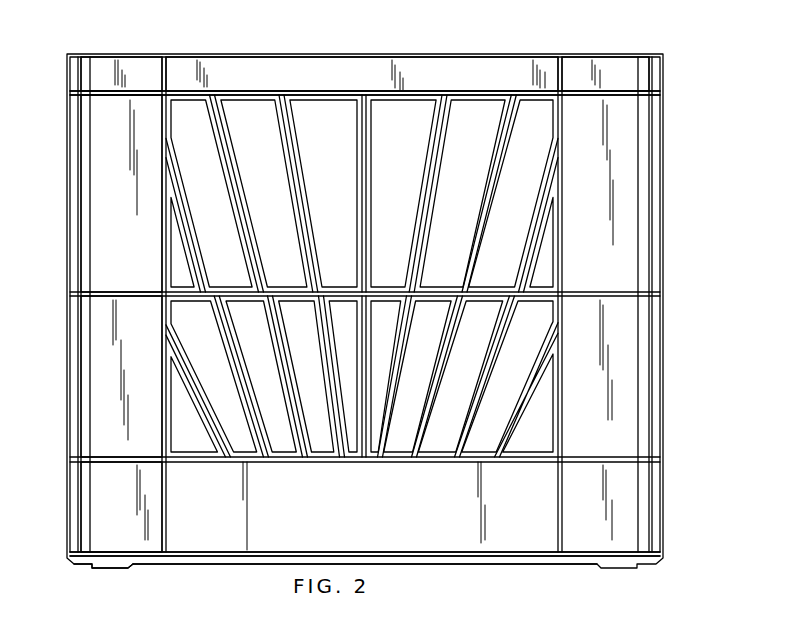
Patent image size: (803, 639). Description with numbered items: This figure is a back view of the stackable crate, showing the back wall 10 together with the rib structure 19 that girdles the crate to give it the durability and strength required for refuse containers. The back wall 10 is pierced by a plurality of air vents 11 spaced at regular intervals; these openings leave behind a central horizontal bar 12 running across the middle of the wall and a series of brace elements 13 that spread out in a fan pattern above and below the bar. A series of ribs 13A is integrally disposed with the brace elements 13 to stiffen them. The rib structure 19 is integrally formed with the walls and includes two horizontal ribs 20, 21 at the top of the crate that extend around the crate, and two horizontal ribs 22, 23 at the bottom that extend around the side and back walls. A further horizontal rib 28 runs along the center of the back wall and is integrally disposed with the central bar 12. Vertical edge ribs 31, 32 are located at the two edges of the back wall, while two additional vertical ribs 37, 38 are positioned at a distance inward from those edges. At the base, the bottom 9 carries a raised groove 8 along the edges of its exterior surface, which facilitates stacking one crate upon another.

The raised groove 8 is at (103, 563).
The bottom 9 is at (173, 560).
The back wall 10 is at (103, 193).
The air vents 11 is at (307, 110).
The central horizontal bar 12 is at (180, 298).
The brace elements 13 is at (435, 110).
The ribs 13A is at (513, 117).
The rib structure 19 is at (563, 187).
The horizontal rib 20 is at (110, 52).
The horizontal rib 21 is at (105, 97).
The horizontal rib 22 is at (100, 457).
The horizontal rib 23 is at (103, 550).
The horizontal rib 28 is at (103, 295).
The vertical edge rib 31 is at (78, 75).
The vertical edge rib 32 is at (652, 77).
The vertical rib 37 is at (172, 52).
The vertical rib 38 is at (562, 70).